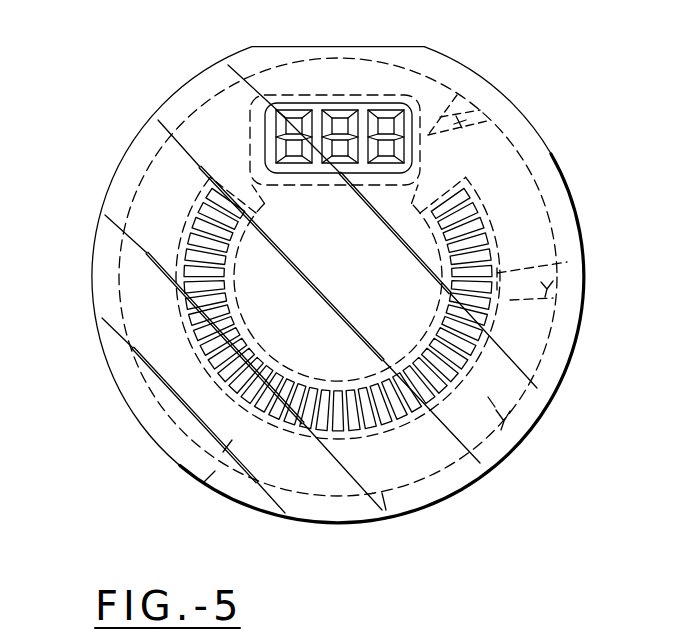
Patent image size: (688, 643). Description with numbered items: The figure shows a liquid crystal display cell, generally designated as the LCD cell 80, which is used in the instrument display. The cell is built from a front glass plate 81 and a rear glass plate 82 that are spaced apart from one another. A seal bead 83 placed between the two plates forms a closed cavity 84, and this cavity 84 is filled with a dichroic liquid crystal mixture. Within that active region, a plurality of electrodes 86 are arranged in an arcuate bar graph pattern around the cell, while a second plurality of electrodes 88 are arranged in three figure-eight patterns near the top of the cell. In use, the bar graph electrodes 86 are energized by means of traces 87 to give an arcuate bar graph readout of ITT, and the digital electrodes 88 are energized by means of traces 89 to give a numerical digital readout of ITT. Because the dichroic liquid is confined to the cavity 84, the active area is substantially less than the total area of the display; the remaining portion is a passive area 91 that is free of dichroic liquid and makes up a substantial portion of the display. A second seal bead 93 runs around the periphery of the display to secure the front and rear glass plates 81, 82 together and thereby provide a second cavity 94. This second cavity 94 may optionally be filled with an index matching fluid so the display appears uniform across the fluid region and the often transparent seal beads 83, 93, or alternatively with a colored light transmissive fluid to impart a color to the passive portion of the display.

The LCD cell 80 is at (122, 407).
The front glass plate 81 is at (118, 271).
The rear glass plate 82 is at (150, 240).
The seal bead 83 is at (190, 202).
The closed cavity 84 is at (207, 173).
The electrodes 86 is at (470, 205).
The traces 87 is at (567, 264).
The second plurality of electrodes 88 is at (385, 112).
The traces 89 is at (457, 95).
The passive area 91 is at (205, 482).
The second seal bead 93 is at (393, 523).
The second cavity 94 is at (518, 440).